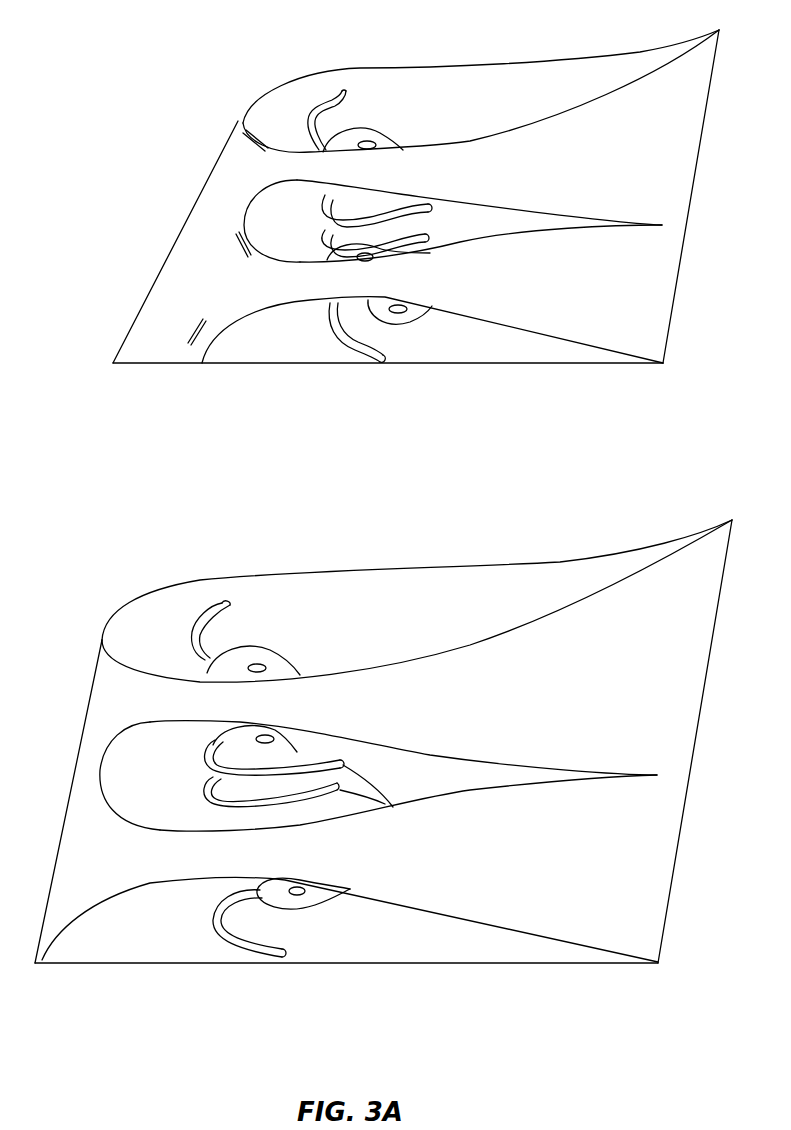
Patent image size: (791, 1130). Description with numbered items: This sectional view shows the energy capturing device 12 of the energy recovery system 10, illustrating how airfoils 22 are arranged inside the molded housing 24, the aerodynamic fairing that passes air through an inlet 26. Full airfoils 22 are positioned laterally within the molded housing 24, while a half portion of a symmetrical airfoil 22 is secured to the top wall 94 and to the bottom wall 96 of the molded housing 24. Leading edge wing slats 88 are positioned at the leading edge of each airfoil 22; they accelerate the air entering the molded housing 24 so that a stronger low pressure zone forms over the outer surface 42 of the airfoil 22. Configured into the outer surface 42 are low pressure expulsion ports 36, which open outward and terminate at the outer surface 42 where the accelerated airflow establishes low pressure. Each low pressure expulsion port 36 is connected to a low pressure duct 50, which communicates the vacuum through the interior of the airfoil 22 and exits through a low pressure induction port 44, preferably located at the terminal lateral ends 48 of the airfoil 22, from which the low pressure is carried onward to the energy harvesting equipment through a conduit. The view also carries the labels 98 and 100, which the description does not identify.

The energy recovery system 10 is at (403, 67).
The energy capturing device 12 is at (241, 61).
The airfoil 22 is at (502, 72).
The molded housing 24 is at (160, 363).
The inlet 26 is at (180, 264).
The low pressure expulsion port 36 is at (396, 153).
The outer surface 42 is at (588, 600).
The low pressure induction port 44 is at (232, 603).
The terminal lateral ends 48 is at (408, 613).
The low pressure duct 50 is at (318, 146).
The leading edge wing slats 88 is at (243, 131).
The top wall 94 is at (325, 567).
The bottom wall 96 is at (375, 965).
The leading edge portion 98 is at (98, 772).
The trailing edge 100 is at (707, 673).